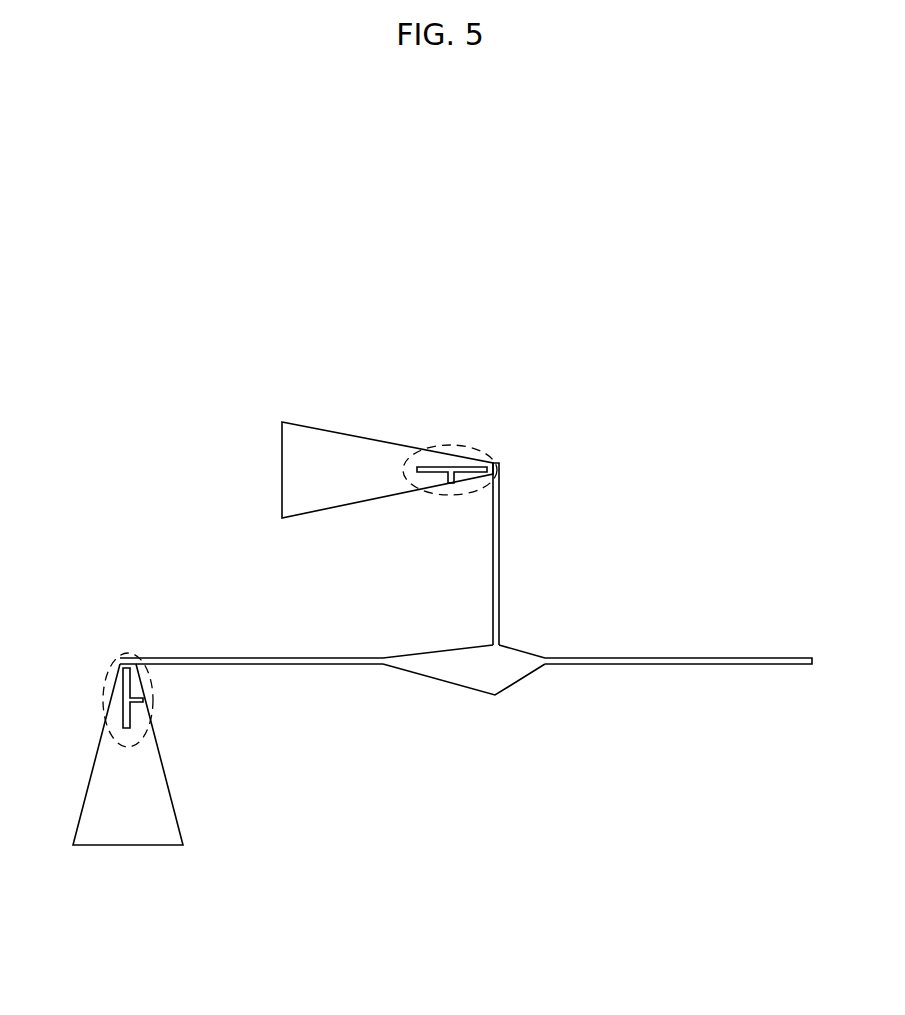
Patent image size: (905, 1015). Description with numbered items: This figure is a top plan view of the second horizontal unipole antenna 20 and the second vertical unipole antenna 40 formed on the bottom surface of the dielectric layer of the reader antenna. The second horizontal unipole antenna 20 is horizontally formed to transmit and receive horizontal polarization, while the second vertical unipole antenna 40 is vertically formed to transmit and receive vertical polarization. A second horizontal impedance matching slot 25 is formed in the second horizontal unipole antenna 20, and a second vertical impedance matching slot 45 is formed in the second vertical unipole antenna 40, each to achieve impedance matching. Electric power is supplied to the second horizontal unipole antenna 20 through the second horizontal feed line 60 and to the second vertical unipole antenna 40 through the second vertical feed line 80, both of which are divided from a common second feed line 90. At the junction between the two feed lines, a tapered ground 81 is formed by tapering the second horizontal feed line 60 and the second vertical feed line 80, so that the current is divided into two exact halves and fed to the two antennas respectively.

The second horizontal unipole antenna 20 is at (346, 435).
The second horizontal impedance matching slot 25 is at (462, 447).
The second vertical unipole antenna 40 is at (170, 810).
The second vertical impedance matching slot 45 is at (154, 697).
The second horizontal feed line 60 is at (499, 550).
The second vertical feed line 80 is at (303, 658).
The tapered ground 81 is at (495, 695).
The second feed line 90 is at (683, 658).